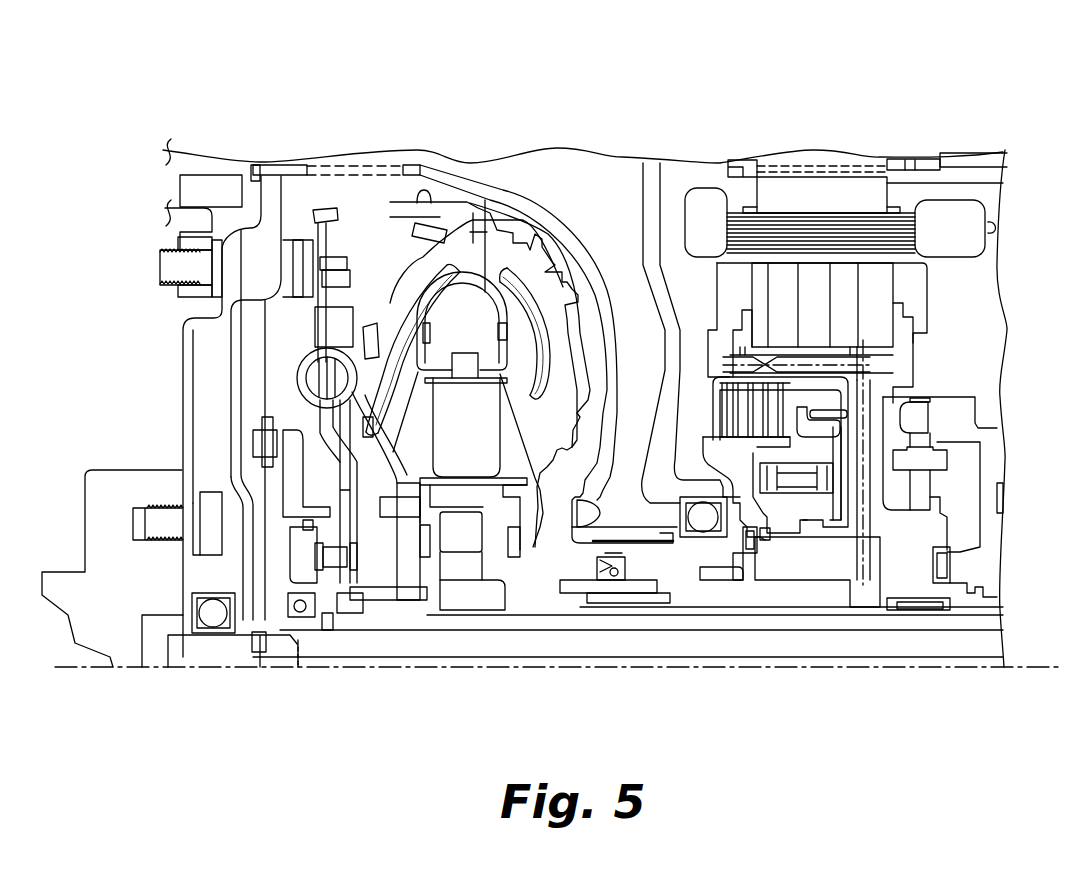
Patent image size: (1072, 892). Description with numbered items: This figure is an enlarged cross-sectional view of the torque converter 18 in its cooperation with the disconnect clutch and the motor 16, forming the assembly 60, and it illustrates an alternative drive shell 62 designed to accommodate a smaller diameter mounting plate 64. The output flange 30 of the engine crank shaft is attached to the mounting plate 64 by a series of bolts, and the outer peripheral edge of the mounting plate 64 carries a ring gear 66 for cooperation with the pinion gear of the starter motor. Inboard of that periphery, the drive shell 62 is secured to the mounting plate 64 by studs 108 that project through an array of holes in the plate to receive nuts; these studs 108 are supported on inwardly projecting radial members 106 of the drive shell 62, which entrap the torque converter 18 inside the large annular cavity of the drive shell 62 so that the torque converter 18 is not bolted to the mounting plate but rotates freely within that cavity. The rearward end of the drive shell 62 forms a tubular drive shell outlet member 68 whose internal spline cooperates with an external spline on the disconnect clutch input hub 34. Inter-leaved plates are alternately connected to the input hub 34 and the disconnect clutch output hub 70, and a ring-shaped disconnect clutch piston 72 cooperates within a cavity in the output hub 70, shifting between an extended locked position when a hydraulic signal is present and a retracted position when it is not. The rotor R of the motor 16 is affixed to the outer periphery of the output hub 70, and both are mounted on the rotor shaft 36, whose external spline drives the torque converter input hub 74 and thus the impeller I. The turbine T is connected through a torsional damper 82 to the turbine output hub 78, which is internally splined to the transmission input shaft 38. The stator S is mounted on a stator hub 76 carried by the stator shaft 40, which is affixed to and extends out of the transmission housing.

The transmission assembly 60 is at (562, 50).
The ring gear 66 is at (213, 174).
The inwardly projecting radial members 106 is at (262, 176).
The drive shell 62 is at (287, 163).
The torsional damper 82 is at (353, 303).
The torque converter 18 is at (490, 207).
The ring gear assembly 16 is at (812, 155).
The studs 108 is at (158, 265).
The mounting plate 64 is at (182, 358).
The output flange 30 is at (135, 470).
The disconnect clutch output hub 70 is at (880, 442).
The turbine output hub 78 is at (353, 600).
The stator hub 76 is at (470, 593).
The torque converter input hub 74 is at (580, 577).
The drive shell outlet member 68 is at (627, 533).
The disconnect clutch input hub 34 is at (663, 553).
The rotor shaft 36 is at (718, 593).
The disconnect clutch piston 72 is at (822, 530).
The transmission input shaft 38 is at (907, 640).
The stator shaft 40 is at (963, 617).
The rotor R is at (930, 303).
The stator S is at (827, 198).
The synchronizer T is at (411, 330).
The impeller I is at (525, 350).